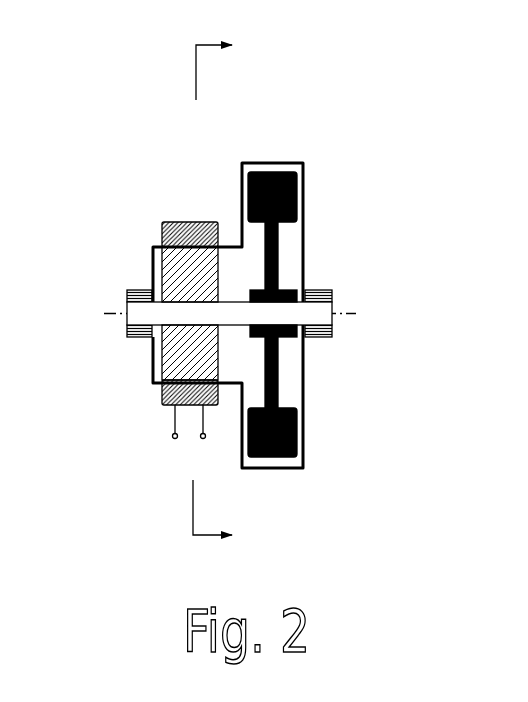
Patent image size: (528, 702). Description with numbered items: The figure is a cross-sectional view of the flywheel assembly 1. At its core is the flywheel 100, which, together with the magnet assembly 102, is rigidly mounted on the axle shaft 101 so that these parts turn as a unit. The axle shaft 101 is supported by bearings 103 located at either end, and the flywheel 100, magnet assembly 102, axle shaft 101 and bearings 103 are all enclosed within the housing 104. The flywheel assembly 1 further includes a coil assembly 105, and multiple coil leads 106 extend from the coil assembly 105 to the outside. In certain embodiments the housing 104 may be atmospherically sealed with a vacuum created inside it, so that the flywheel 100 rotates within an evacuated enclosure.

The flywheel assembly 1 is at (302, 130).
The flywheel 100 is at (292, 182).
The axle shaft 101 is at (273, 313).
The magnet assembly 102 is at (170, 355).
The bearings 103 is at (127, 290).
The housing 104 is at (242, 203).
The coil assembly 105 is at (162, 223).
The coil leads 106 is at (200, 443).